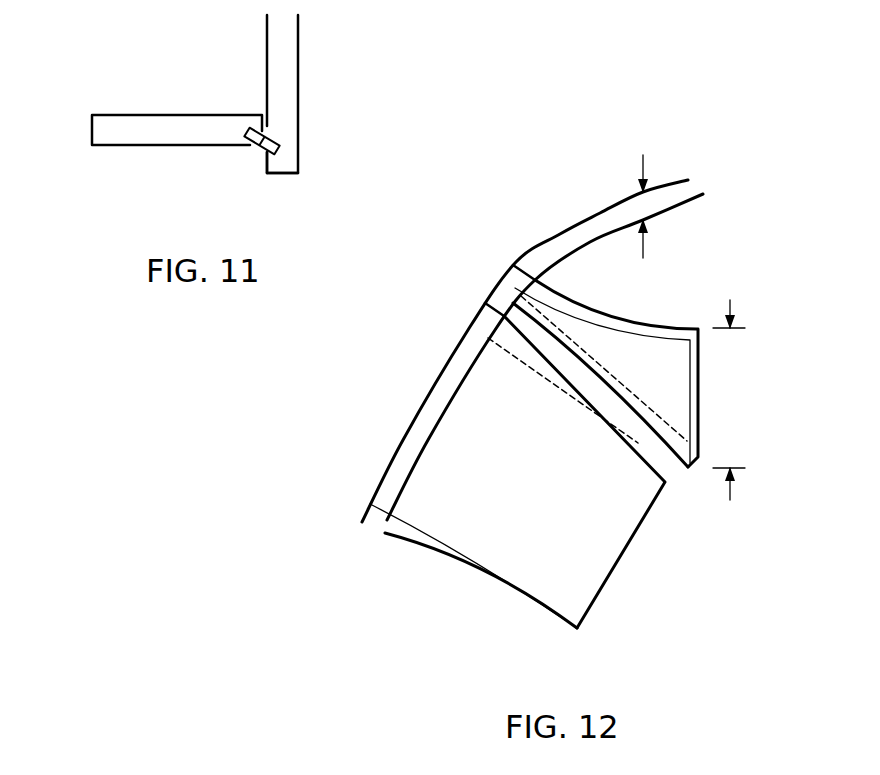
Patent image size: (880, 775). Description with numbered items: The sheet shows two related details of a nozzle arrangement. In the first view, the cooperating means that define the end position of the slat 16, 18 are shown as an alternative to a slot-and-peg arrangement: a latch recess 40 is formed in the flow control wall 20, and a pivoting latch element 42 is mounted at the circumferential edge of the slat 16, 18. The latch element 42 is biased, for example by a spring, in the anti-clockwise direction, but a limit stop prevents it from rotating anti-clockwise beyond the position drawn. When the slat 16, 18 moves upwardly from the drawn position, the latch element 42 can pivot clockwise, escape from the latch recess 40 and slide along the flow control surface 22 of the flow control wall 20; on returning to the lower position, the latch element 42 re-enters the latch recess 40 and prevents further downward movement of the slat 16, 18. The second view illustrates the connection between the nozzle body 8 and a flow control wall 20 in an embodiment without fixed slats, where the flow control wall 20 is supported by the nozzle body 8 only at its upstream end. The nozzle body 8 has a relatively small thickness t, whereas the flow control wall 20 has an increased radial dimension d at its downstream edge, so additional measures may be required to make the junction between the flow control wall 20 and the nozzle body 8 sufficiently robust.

In FIG. 12, the nozzle body 8 is at (510, 233).
In FIG. 11, the slat 16 is at (177, 104).
In FIG. 12, the slat 16 is at (529, 481).
In FIG. 11, the slat 18 is at (170, 125).
In FIG. 12, the slat 18 is at (550, 580).
In FIG. 11, the flow control wall 20 is at (287, 85).
In FIG. 12, the flow control wall 20 is at (642, 352).
In FIG. 11, the flow control surface 22 is at (267, 50).
In FIG. 11, the latch recess 40 is at (278, 157).
In FIG. 11, the latch element 42 is at (247, 147).
In FIG. 12, the thickness t is at (644, 166).
In FIG. 12, the radial dimension d is at (730, 302).